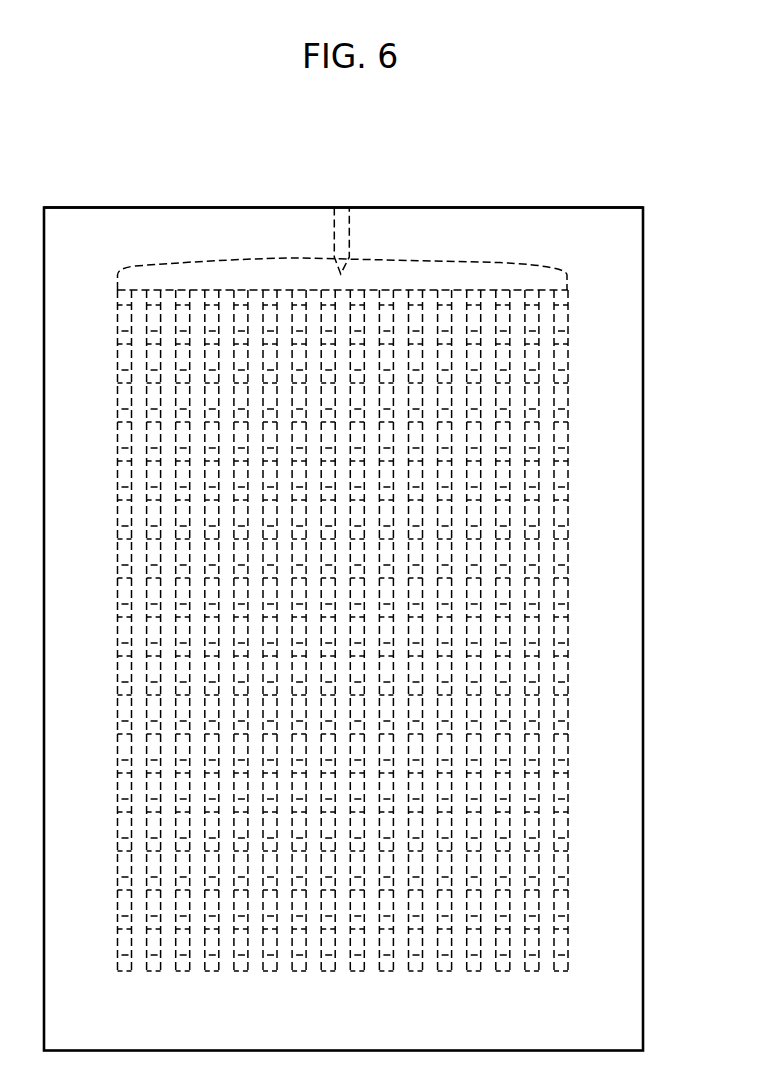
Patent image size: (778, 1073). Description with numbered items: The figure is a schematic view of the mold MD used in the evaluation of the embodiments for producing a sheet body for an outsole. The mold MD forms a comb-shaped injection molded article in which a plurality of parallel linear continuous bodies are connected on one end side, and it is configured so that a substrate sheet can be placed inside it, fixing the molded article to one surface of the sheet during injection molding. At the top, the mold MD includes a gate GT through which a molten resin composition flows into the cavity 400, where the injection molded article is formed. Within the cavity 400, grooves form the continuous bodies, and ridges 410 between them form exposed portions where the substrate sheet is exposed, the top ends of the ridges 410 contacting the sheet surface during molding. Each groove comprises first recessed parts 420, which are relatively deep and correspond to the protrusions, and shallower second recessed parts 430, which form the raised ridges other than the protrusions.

The cavity 400 is at (553, 287).
The ridges 410 is at (518, 347).
The first recessed parts 420 is at (527, 398).
The second recessed parts 430 is at (537, 458).
The gate GT is at (341, 273).
The mold MD is at (598, 233).